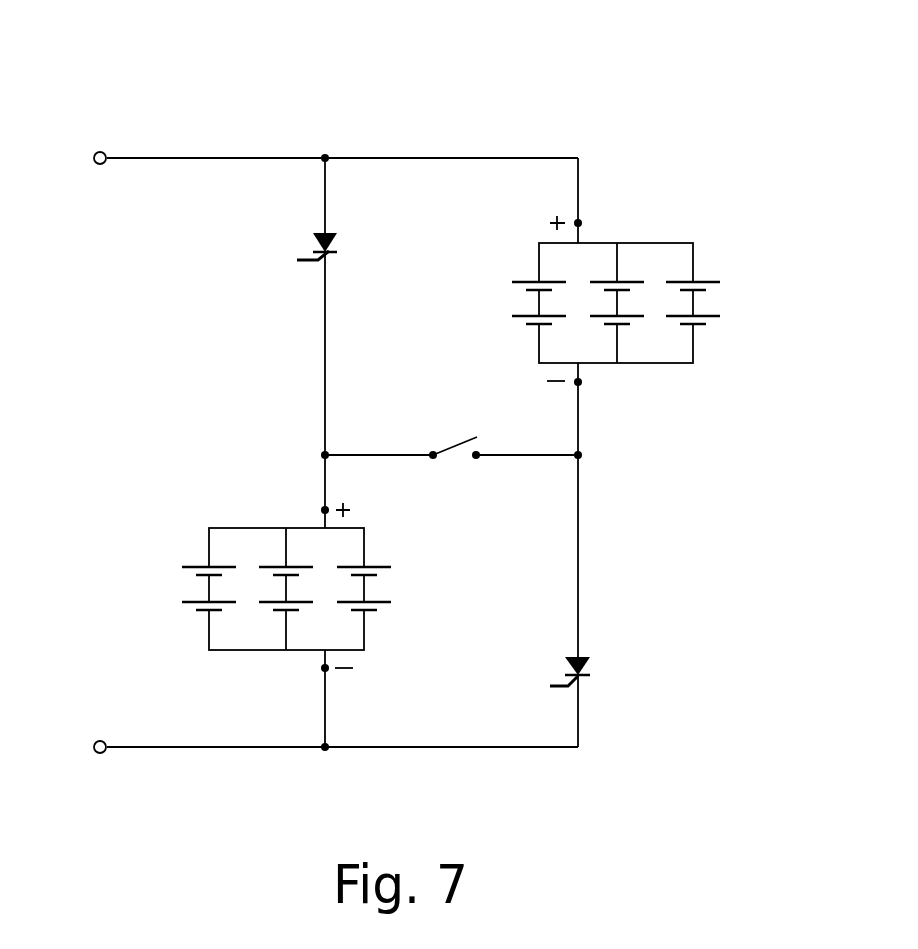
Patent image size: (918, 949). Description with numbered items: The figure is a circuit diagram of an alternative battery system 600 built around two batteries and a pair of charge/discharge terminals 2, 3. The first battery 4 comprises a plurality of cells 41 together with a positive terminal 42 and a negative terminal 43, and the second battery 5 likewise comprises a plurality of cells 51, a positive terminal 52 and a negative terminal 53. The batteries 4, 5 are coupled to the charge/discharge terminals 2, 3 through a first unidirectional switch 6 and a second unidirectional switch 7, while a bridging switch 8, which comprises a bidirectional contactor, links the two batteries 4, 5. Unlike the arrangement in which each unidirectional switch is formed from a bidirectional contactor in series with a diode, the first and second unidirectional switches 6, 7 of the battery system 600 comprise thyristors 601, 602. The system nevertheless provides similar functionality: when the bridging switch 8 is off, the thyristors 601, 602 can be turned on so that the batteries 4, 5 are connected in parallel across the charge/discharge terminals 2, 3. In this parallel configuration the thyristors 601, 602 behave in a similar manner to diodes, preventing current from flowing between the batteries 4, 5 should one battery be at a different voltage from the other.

The battery system 600 is at (525, 73).
The charge/discharge terminal 2 is at (100, 151).
The charge/discharge terminal 3 is at (100, 740).
The first battery 4 is at (254, 584).
The cells 41 is at (190, 600).
The positive terminal 42 is at (320, 509).
The negative terminal 43 is at (321, 669).
The second battery 5 is at (650, 296).
The cells 51 is at (713, 317).
The positive terminal 52 is at (583, 221).
The negative terminal 53 is at (583, 386).
The first unidirectional switch 6 is at (313, 229).
The thyristor 601 is at (330, 240).
The second unidirectional switch 7 is at (584, 647).
The thyristor 602 is at (587, 660).
The bridging switch 8 is at (463, 440).